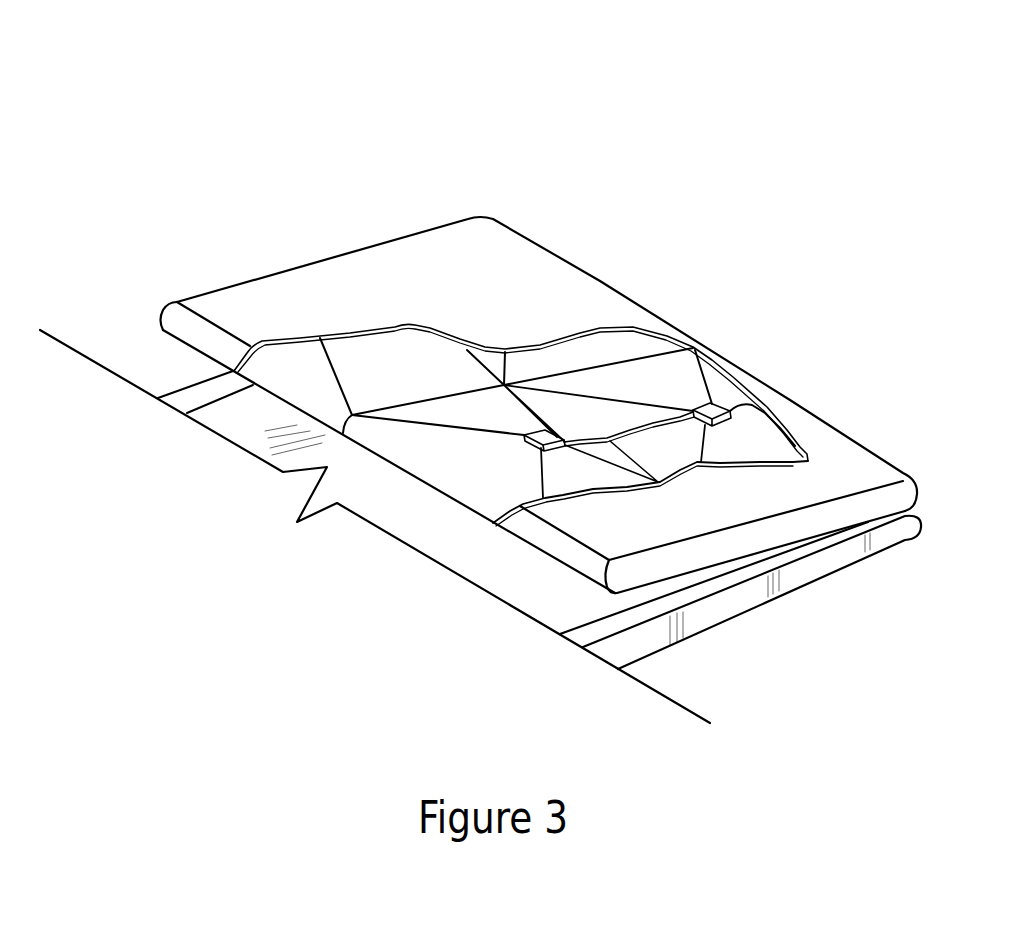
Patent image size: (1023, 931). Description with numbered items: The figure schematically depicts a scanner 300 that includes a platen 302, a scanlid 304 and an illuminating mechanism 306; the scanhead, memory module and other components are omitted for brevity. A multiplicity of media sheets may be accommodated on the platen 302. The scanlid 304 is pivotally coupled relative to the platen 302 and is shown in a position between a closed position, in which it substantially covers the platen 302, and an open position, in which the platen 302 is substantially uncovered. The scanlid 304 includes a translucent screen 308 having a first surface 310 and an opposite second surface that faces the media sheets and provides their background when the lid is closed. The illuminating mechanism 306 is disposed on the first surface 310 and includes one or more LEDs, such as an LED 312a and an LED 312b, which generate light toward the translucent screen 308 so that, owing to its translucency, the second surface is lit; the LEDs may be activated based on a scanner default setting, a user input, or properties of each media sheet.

The scanner 300 is at (820, 93).
The platen 302 is at (473, 548).
The scanlid 304 is at (276, 277).
The illuminating mechanism 306 is at (683, 375).
The translucent screen 308 is at (417, 479).
The first surface 310 is at (612, 364).
The LED 312a is at (525, 438).
The LED 312b is at (715, 407).